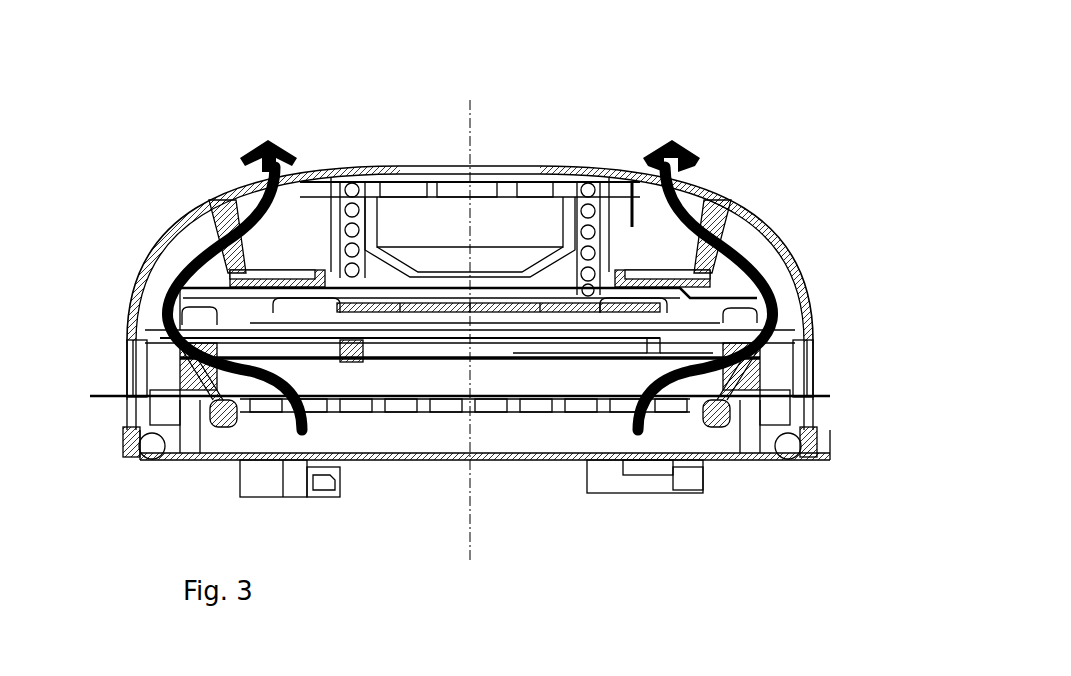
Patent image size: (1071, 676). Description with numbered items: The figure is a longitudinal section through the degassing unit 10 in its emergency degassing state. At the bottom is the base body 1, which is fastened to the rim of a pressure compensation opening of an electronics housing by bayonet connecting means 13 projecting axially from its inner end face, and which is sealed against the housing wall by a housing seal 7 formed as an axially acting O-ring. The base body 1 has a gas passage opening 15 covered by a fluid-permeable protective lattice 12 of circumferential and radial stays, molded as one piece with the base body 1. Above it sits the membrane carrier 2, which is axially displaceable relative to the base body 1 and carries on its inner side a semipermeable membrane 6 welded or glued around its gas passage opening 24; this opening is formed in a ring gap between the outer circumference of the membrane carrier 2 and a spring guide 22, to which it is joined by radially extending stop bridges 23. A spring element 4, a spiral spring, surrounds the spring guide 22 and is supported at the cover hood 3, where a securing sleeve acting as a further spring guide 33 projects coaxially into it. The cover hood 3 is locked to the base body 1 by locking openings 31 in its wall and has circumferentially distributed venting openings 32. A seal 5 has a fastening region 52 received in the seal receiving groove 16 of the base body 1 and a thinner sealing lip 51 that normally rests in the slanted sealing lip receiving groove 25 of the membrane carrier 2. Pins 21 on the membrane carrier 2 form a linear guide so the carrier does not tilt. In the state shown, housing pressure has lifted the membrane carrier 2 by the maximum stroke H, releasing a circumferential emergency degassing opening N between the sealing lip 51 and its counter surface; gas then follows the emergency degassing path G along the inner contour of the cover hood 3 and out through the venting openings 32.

The degassing unit 10 is at (137, 158).
The base body 1 is at (747, 457).
The membrane carrier 2 is at (758, 288).
The cover hood 3 is at (757, 220).
The spring element 4 is at (585, 195).
The seal 5 is at (713, 428).
The semipermeable membrane 6 is at (353, 337).
The housing seal 7 is at (787, 452).
The protective lattice 12 is at (442, 403).
The bayonet connecting means 13 is at (596, 487).
The gas passage opening 15 is at (368, 413).
The seal receiving groove 16 is at (215, 427).
The pins 21 is at (772, 346).
The spring guide 22 is at (360, 295).
The stop bridges 23 is at (632, 290).
The gas passage opening 24 is at (680, 385).
The sealing lip receiving groove 25 is at (163, 260).
The locking openings 31 is at (127, 425).
The venting openings 32 is at (294, 262).
The spring guide (securing sleeve) 33 is at (568, 192).
The sealing lip 51 is at (772, 372).
The fastening region 52 is at (722, 410).
The emergency degassing opening N is at (735, 338).
The maximum stroke H is at (240, 343).
The emergency degassing path G is at (469, 264).